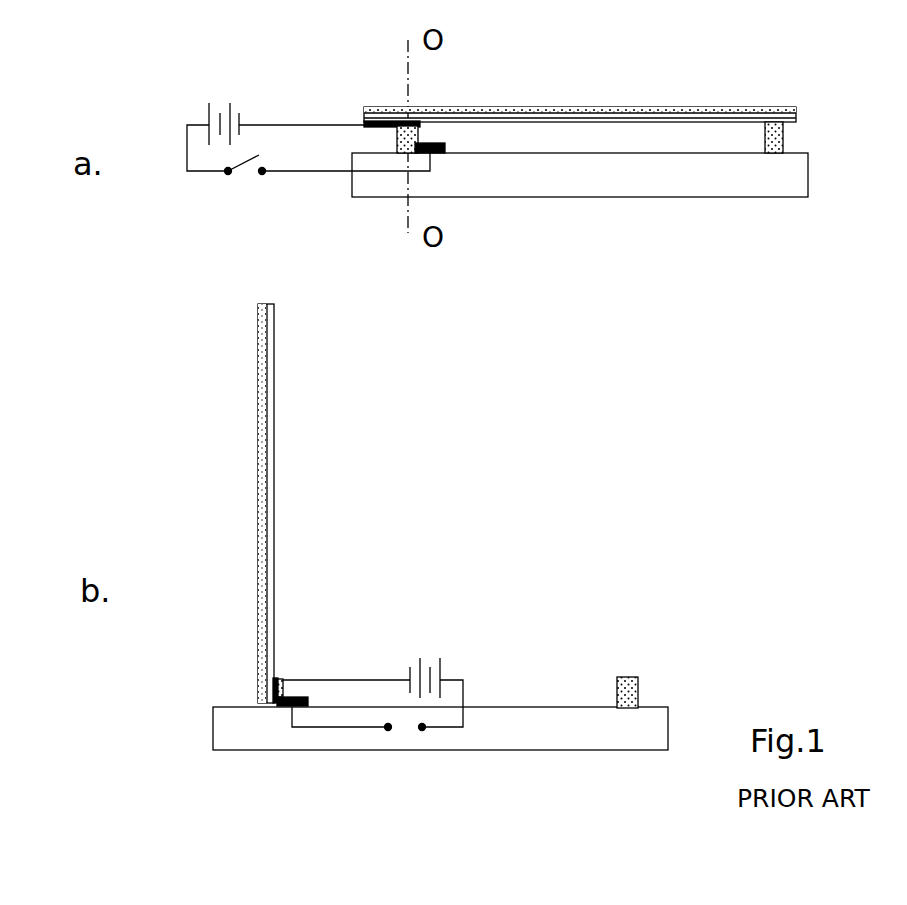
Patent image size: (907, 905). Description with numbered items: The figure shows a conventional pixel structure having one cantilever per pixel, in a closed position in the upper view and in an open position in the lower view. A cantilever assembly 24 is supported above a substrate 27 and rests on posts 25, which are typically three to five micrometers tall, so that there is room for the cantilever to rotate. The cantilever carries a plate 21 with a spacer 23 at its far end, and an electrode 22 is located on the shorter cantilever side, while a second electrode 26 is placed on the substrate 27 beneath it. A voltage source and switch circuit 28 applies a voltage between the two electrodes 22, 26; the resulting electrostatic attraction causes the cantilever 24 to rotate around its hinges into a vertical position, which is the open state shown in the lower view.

The movable plate 21 is at (792, 110).
The electrode 22 is at (373, 126).
The spacer 23 is at (797, 122).
The cantilever assembly 24 is at (592, 98).
The posts 25 is at (398, 148).
The electrode 26 is at (443, 152).
The substrate 27 is at (562, 177).
The drive circuit with voltage source and switch 28 is at (195, 187).